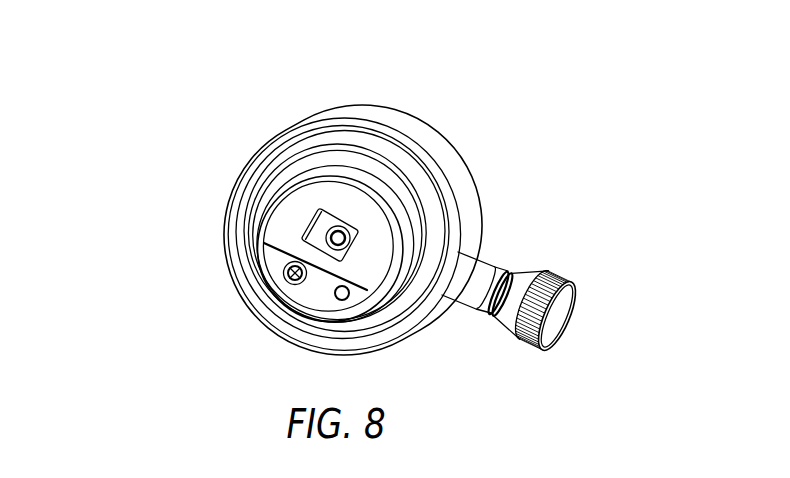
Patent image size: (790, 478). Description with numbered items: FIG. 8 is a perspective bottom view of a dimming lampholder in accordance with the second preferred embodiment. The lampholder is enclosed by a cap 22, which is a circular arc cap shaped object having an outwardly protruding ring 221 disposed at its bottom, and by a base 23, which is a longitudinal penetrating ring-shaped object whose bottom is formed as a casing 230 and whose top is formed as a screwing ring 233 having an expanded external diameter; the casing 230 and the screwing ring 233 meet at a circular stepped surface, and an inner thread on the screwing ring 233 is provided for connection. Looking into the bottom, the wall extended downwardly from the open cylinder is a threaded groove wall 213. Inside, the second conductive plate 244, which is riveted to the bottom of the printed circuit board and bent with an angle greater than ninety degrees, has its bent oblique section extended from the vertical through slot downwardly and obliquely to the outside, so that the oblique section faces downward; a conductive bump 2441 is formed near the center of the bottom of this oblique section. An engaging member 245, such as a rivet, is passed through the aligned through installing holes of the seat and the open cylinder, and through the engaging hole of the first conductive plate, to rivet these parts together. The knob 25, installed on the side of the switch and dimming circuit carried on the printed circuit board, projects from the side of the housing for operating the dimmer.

The cap 22 is at (476, 193).
The base 23 is at (316, 103).
The screwing ring 233 is at (436, 177).
The outwardly protruding ring 221 is at (418, 140).
The casing 230 is at (352, 163).
The threaded groove wall 213 is at (250, 278).
The second conductive plate 244 is at (315, 223).
The conductive bump 2441 is at (337, 240).
The engaging member 245 is at (285, 286).
The knob 25 is at (527, 288).